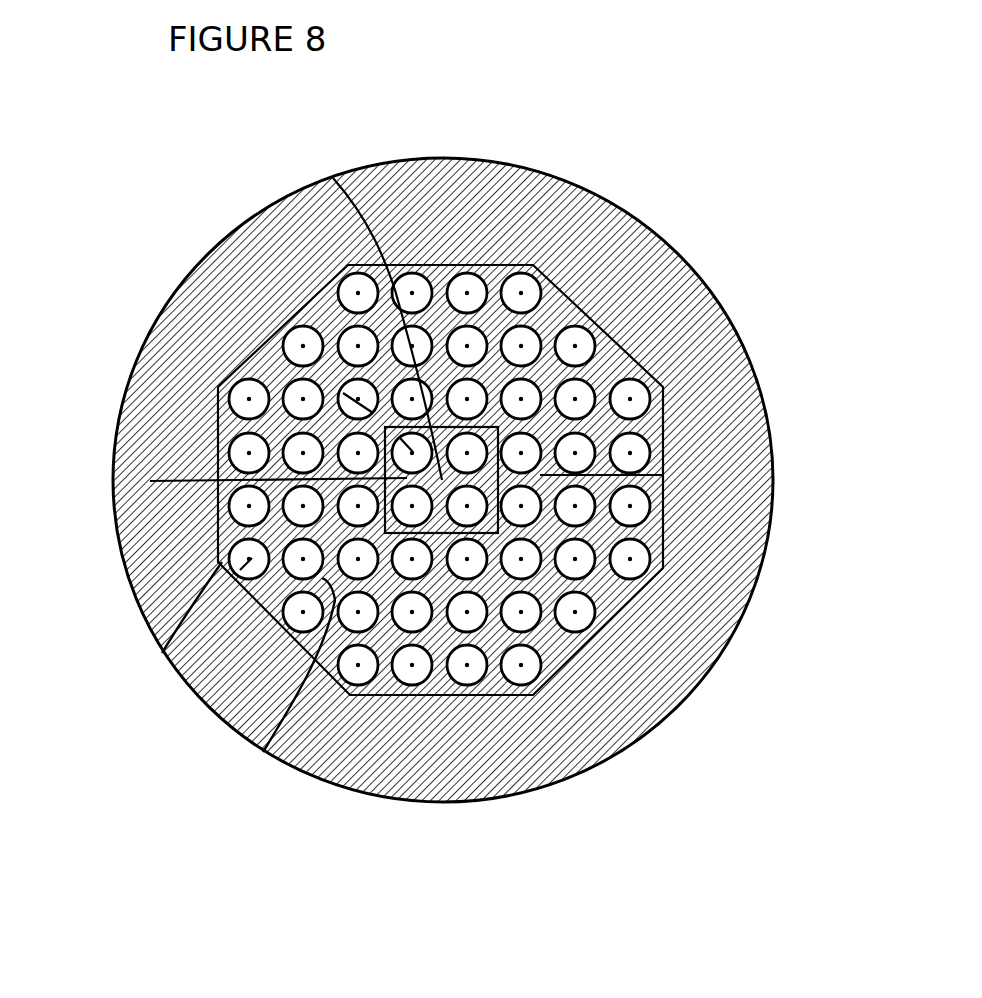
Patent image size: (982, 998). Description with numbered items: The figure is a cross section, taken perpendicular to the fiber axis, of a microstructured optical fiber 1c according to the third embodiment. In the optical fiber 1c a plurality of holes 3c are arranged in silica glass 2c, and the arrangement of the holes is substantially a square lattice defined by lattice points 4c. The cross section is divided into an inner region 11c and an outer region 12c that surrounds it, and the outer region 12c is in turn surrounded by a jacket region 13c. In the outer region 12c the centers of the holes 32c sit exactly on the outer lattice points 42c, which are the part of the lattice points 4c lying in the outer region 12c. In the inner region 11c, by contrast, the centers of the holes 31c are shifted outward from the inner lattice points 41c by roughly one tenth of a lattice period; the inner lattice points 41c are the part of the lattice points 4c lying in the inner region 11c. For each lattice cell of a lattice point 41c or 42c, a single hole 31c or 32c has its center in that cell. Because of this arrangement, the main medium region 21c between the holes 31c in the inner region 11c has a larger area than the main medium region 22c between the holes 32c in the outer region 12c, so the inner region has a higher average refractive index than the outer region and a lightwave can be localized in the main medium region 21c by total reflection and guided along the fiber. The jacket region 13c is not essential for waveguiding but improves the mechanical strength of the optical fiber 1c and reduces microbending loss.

The optical fiber 1c is at (633, 215).
The silica glass 2c is at (665, 290).
The holes 3c is at (628, 398).
The lattice points 4c is at (627, 453).
The inner region 11c is at (150, 481).
The outer region 12c is at (263, 752).
The jacket region 13c is at (720, 553).
The main medium region 21c is at (333, 178).
The main medium region 22c is at (663, 475).
The holes 31c is at (395, 446).
The holes 32c is at (230, 558).
The inner lattice points 41c is at (343, 393).
The outer lattice points 42c is at (162, 653).